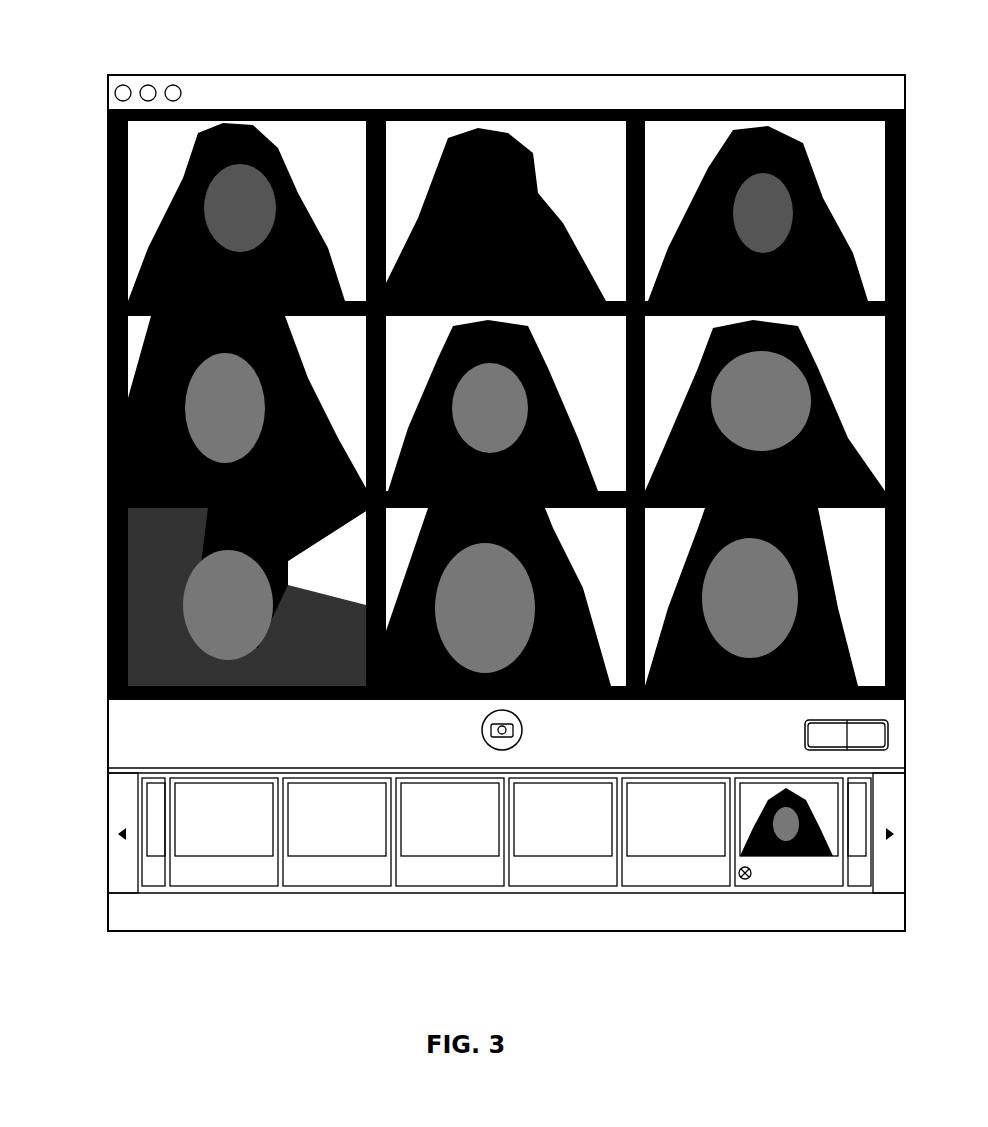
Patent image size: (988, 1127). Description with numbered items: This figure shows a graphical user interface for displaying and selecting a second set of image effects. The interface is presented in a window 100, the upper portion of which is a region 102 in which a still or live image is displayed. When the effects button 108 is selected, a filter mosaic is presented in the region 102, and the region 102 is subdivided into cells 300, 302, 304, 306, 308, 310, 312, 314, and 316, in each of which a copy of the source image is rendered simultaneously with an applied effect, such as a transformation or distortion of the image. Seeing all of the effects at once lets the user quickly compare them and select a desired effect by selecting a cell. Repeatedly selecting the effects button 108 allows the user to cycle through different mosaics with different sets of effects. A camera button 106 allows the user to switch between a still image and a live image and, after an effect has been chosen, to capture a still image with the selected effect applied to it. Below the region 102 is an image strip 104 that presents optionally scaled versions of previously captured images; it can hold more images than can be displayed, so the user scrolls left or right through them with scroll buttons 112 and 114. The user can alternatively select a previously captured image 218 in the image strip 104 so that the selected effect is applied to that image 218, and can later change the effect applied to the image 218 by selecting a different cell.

The window 100 is at (188, 56).
The region 102 is at (250, 694).
The image strip 104 is at (95, 763).
The camera button 106 is at (470, 731).
The effects button 108 is at (720, 727).
The scroll button 112 is at (879, 890).
The scroll button 114 is at (114, 890).
The previously captured image 218 is at (775, 890).
The cell 300 is at (171, 140).
The cell 302 is at (430, 140).
The cell 304 is at (691, 140).
The cell 306 is at (171, 334).
The cell 308 is at (430, 334).
The cell 310 is at (691, 334).
The cell 312 is at (171, 528).
The cell 314 is at (430, 528).
The cell 316 is at (690, 528).